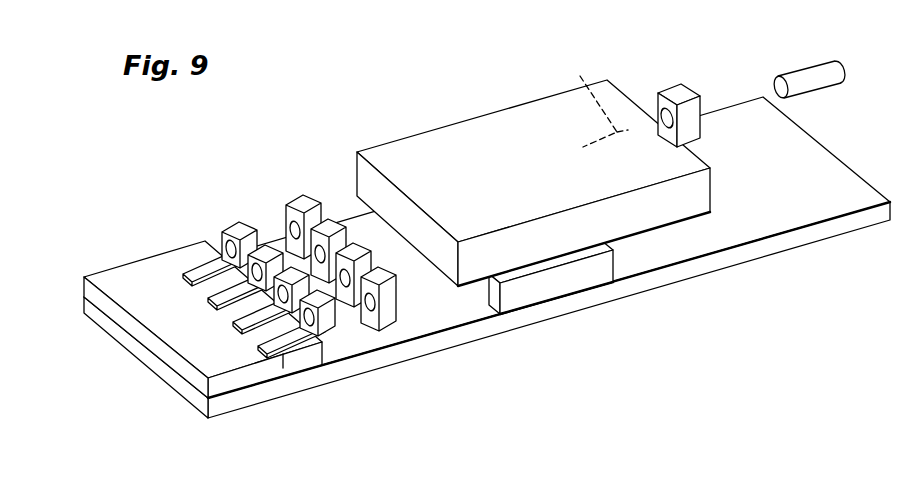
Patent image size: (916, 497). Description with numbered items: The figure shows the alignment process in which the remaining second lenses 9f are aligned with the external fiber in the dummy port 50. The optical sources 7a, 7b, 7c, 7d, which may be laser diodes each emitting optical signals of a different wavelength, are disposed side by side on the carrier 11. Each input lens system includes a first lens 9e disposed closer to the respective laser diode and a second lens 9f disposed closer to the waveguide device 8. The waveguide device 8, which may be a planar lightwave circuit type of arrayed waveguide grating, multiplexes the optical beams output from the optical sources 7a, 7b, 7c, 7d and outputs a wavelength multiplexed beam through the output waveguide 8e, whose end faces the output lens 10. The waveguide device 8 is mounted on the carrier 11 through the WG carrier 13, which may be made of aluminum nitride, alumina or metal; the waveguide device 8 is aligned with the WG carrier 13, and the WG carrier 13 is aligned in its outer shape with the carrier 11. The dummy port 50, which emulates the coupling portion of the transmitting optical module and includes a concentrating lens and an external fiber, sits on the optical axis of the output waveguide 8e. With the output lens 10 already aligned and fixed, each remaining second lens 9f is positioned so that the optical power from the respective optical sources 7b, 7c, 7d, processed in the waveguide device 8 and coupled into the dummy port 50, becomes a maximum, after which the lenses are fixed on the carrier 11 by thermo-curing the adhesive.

The optical source 7a is at (192, 268).
The optical source 7b is at (225, 297).
The optical source 7c is at (240, 322).
The optical source 7d is at (283, 350).
The first lens 9e is at (240, 221).
The second lens 9f is at (381, 268).
The waveguide device 8 is at (497, 130).
The output waveguide 8e is at (580, 76).
The output lens 10 is at (688, 85).
The carrier 11 is at (847, 190).
The WG carrier 13 is at (560, 283).
The dummy port 50 is at (828, 63).